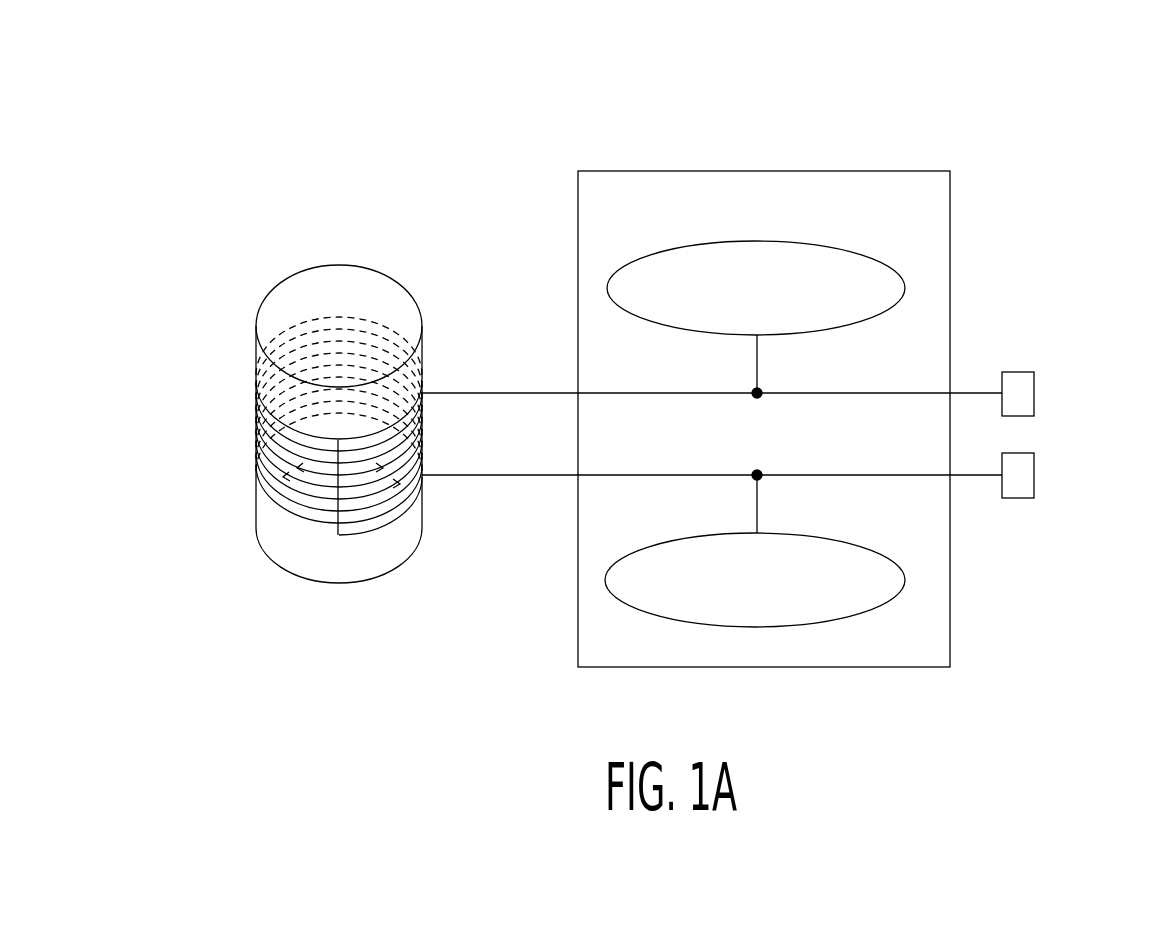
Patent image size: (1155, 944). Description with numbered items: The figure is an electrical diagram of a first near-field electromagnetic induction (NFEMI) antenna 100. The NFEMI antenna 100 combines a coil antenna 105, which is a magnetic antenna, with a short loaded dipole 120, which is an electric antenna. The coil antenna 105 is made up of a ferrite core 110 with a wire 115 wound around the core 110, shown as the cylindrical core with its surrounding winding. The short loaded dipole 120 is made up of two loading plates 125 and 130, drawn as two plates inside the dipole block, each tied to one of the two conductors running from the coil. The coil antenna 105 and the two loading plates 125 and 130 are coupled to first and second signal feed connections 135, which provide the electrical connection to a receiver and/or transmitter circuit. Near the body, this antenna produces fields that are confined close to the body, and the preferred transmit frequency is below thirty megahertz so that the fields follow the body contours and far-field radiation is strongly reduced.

The near-field electromagnetic induction (NFEMI) antenna 100 is at (268, 127).
The coil antenna 105 is at (251, 266).
The ferrite core 110 is at (267, 287).
The wire 115 is at (256, 443).
The short loaded dipole 120 is at (691, 171).
The loading plate 125 is at (905, 288).
The loading plate 130 is at (905, 580).
The signal feed connections 135 is at (1034, 390).